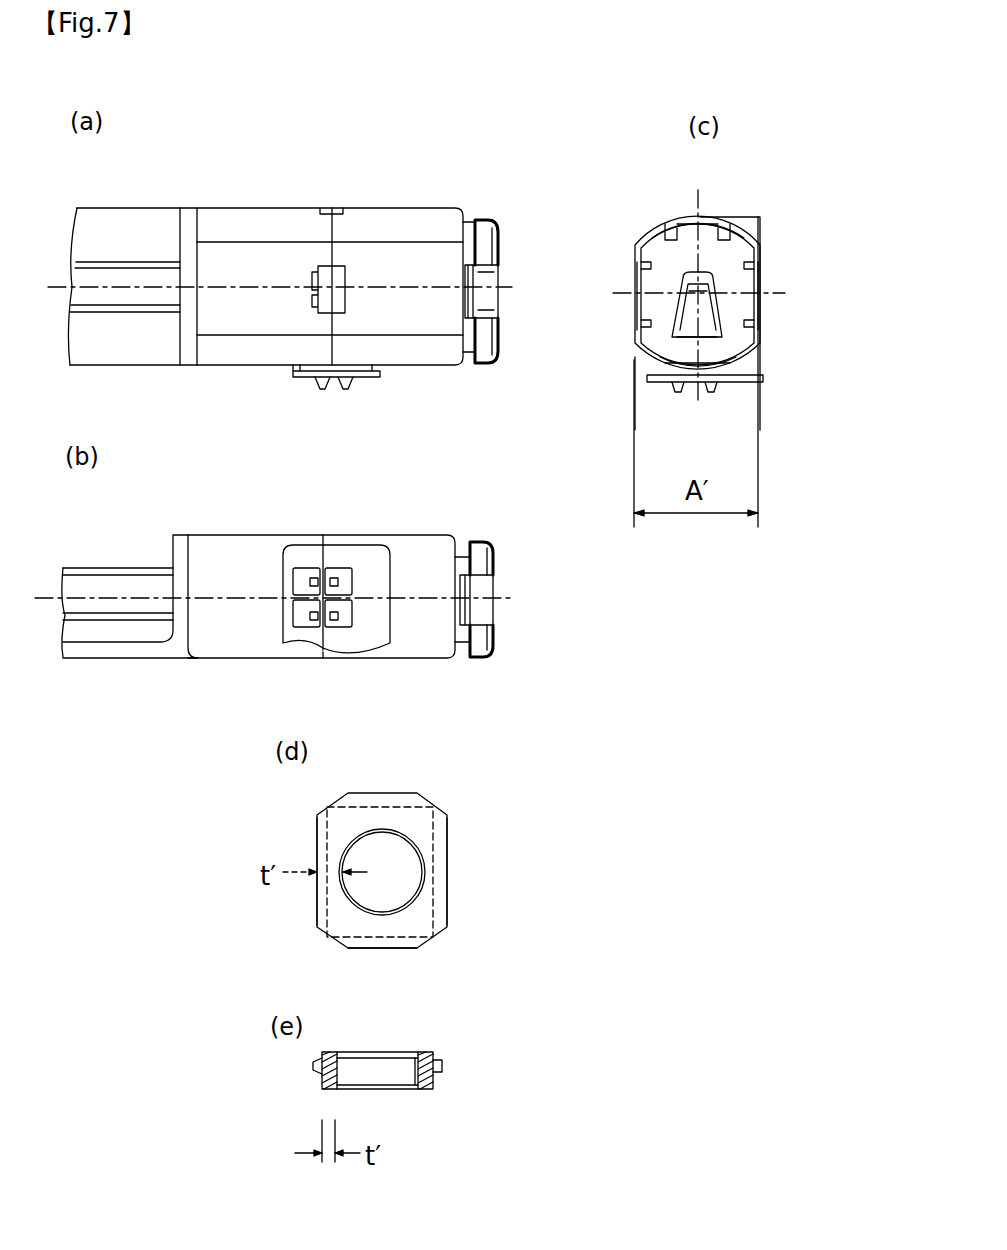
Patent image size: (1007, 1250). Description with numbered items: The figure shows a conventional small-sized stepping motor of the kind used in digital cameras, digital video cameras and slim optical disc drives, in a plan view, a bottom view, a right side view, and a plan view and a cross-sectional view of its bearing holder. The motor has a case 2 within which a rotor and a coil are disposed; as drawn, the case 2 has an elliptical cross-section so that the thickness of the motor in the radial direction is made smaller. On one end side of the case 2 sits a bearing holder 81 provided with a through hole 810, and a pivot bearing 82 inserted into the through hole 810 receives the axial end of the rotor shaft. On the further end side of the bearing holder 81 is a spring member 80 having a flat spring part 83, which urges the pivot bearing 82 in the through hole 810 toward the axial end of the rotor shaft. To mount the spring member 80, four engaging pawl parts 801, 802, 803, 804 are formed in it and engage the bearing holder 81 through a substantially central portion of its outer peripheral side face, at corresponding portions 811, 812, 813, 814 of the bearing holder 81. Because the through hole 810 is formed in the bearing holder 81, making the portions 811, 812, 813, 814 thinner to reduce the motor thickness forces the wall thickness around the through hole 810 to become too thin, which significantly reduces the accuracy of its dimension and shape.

The case 2 is at (405, 208).
The spring member 80 is at (673, 431).
The engaging pawl part 801 is at (490, 272).
The engaging pawl part 802 is at (485, 365).
The engaging pawl part 803 is at (765, 285).
The engaging pawl part 804 is at (480, 220).
The bearing holder 81 is at (412, 716).
The pivot bearing 82 is at (425, 862).
The flat spring part 83 is at (710, 305).
The through hole 810 is at (392, 830).
The engaging portion 811 is at (322, 840).
The engaging portion 812 is at (372, 940).
The engaging portion 813 is at (437, 898).
The engaging portion 814 is at (372, 805).